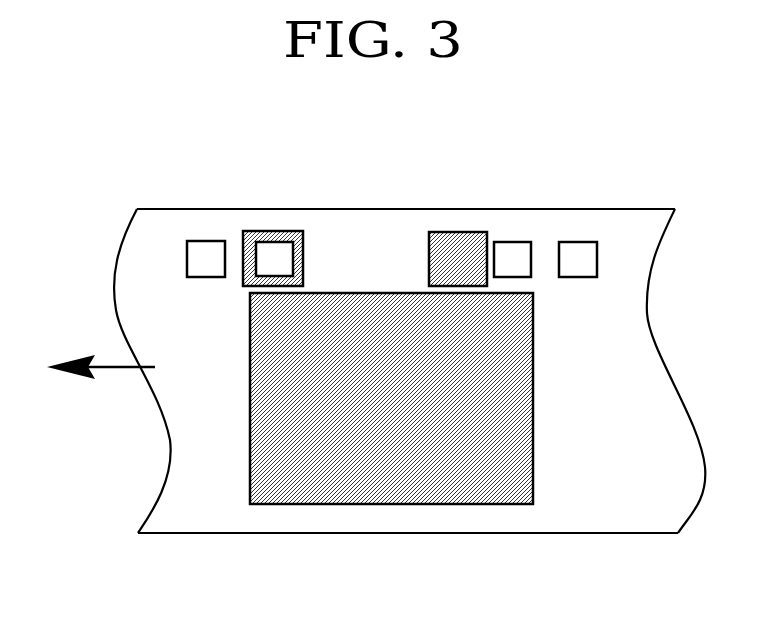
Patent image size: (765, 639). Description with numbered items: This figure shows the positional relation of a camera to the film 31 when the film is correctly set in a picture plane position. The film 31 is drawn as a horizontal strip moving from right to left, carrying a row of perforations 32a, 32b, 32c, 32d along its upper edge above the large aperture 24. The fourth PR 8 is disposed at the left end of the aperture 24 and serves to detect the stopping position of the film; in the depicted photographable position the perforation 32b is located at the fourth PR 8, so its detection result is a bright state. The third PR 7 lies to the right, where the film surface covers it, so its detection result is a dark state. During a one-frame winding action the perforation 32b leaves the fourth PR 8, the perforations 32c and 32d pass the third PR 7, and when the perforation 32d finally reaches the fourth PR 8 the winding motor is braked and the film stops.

The film 31 is at (582, 209).
The perforation 32a is at (206, 241).
The perforation 32b is at (270, 245).
The perforation 32c is at (510, 242).
The perforation 32d is at (587, 242).
The fourth PR 8 is at (290, 232).
The third PR 7 is at (452, 232).
The aperture 24 is at (393, 505).